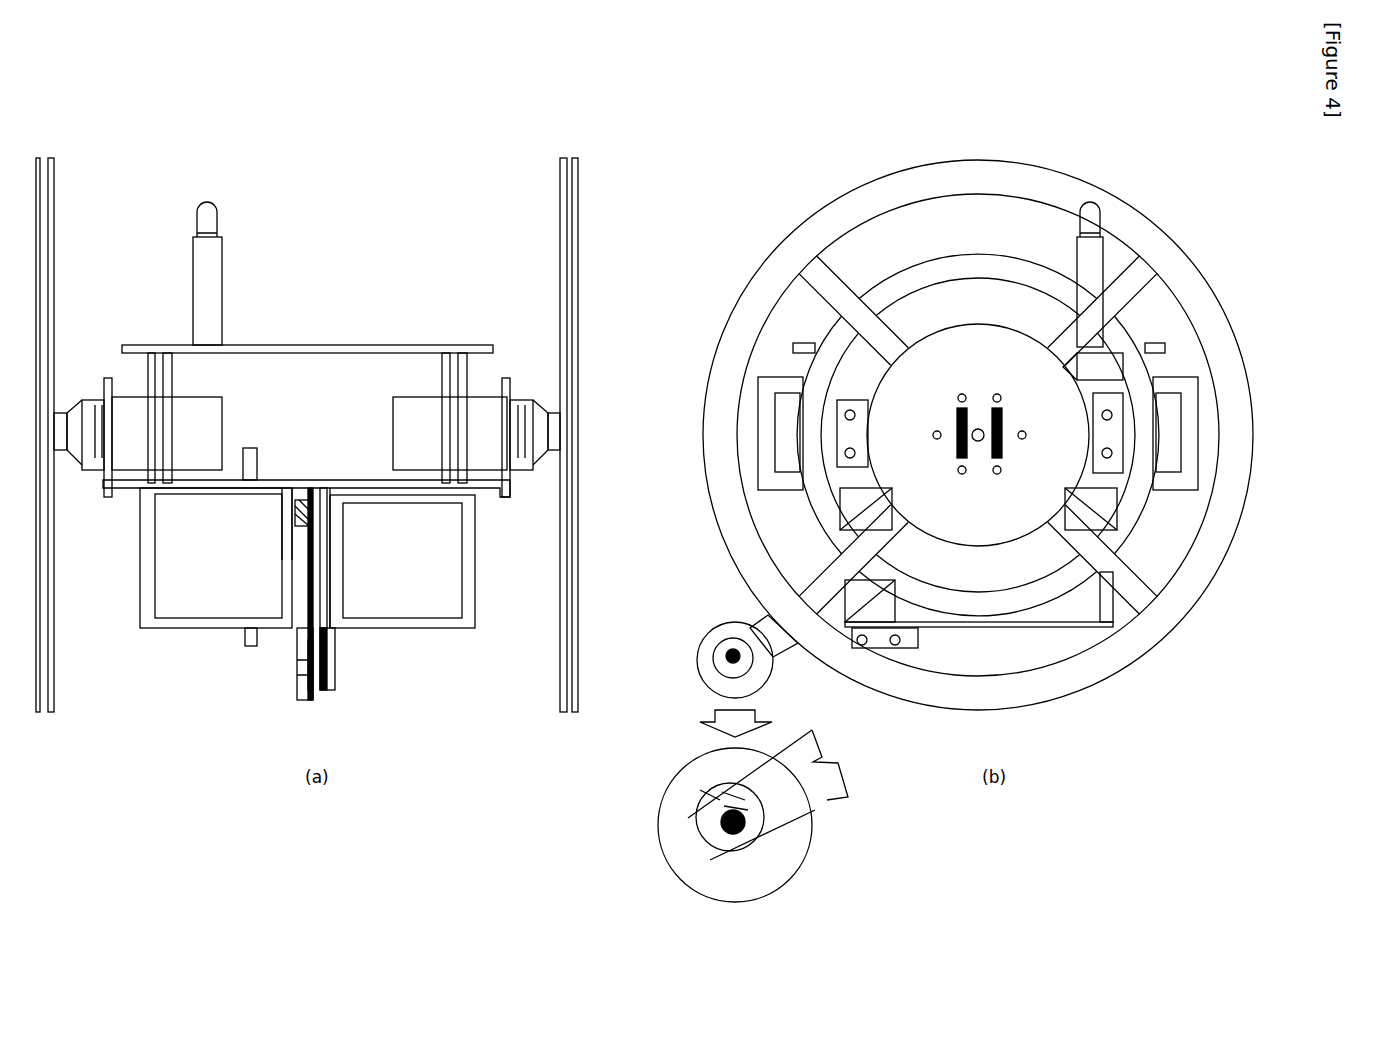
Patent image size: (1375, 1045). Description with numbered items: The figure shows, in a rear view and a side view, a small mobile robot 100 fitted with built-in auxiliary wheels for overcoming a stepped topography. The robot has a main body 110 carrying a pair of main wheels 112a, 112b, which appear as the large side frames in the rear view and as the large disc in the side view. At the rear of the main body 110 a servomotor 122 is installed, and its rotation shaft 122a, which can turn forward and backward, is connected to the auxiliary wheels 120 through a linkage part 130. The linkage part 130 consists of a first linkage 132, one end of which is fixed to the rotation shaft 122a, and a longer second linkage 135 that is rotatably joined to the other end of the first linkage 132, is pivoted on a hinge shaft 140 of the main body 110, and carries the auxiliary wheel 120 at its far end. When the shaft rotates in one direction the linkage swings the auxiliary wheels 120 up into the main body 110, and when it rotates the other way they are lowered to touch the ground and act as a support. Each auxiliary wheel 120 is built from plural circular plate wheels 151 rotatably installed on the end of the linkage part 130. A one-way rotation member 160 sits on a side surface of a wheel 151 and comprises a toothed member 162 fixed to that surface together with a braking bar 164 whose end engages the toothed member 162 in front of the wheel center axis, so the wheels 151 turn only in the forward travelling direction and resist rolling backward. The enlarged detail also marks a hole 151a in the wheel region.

In FIG. 4A, the small mobile robot 100 is at (412, 199).
In FIG. 4B, the small mobile robot 100 is at (758, 199).
In FIG. 4A, the main body 110 is at (308, 345).
In FIG. 4B, the main body 110 is at (1152, 338).
In FIG. 4A, the main wheel 112a is at (55, 668).
In FIG. 4B, the main wheel 112a is at (1082, 686).
In FIG. 4A, the main wheel 112b is at (560, 668).
In FIG. 4B, the main wheel 112b is at (978, 435).
In FIG. 4A, the auxiliary wheel 120 is at (286, 678).
In FIG. 4B, the auxiliary wheel 120 is at (716, 614).
In FIG. 4A, the servomotor 122 is at (199, 610).
In FIG. 4A, the rotation shaft 122a is at (297, 486).
In FIG. 4A, the linkage part 130 is at (295, 580).
In FIG. 4A, the first linkage 132 is at (318, 495).
In FIG. 4A, the second linkage 135 is at (343, 550).
In FIG. 4B, the second linkage 135 is at (822, 812).
In FIG. 4A, the hinge shaft 140 is at (308, 597).
In FIG. 4A, the wheel 151 is at (297, 690).
In FIG. 4B, the wheel 151 is at (776, 876).
In FIG. 4B, the bushing hole 151a is at (703, 880).
In FIG. 4B, the one-way rotation member 160 is at (800, 855).
In FIG. 4A, the toothed member 162 is at (331, 683).
In FIG. 4B, the toothed member 162 is at (725, 815).
In FIG. 4A, the braking bar 164 is at (332, 652).
In FIG. 4B, the braking bar 164 is at (735, 790).